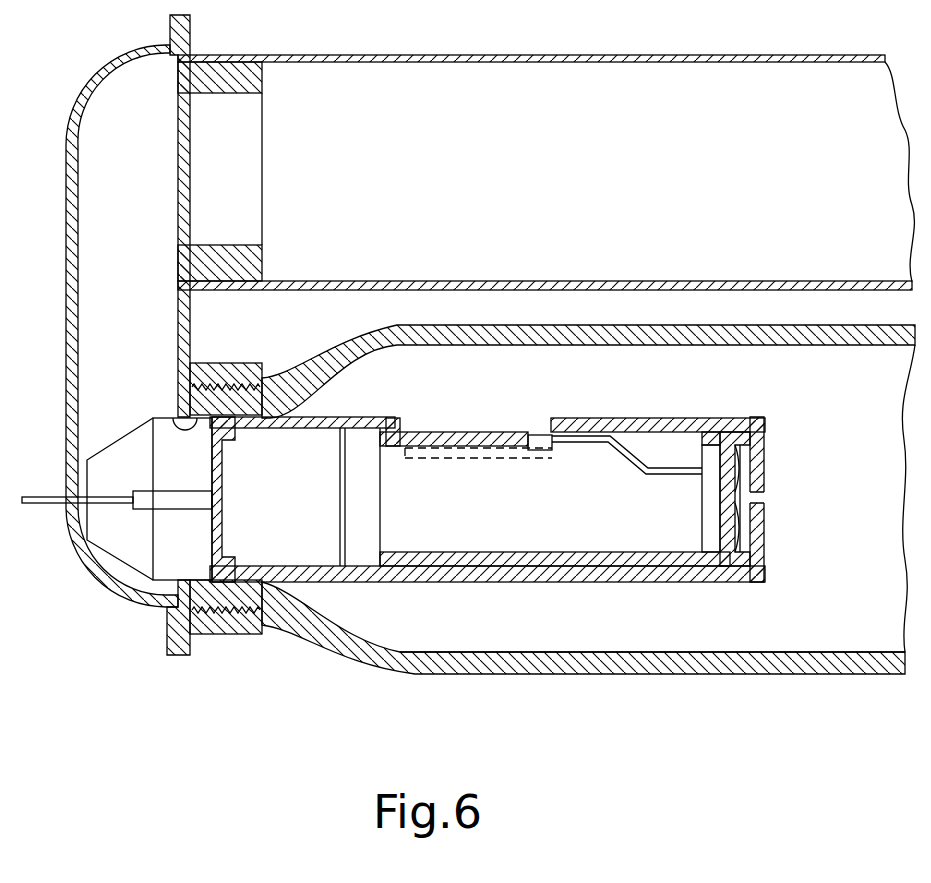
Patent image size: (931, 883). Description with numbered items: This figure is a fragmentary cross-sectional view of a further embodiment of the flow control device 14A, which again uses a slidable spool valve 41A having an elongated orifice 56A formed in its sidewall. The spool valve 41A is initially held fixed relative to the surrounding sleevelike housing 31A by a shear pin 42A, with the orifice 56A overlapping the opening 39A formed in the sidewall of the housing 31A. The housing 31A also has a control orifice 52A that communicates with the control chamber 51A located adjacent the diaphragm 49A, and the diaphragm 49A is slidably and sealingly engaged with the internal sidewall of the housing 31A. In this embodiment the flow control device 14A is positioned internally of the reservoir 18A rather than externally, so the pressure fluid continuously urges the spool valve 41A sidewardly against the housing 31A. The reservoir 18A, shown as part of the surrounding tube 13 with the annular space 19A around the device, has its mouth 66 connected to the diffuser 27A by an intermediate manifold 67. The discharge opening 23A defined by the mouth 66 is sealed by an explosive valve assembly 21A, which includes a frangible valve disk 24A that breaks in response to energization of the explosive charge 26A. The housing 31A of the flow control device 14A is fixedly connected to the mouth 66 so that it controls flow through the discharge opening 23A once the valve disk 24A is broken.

The intermediate manifold 67 is at (82, 108).
The diffuser 27A is at (526, 55).
The housing 31A is at (668, 422).
The tube 13 is at (524, 680).
The reservoir 18A is at (733, 666).
The annular space 19A is at (827, 630).
The mouth 66 is at (221, 600).
The flow control device 14A is at (637, 586).
The frangible valve disk 24A is at (223, 476).
The spool valve 41A is at (530, 557).
The shear pin 42A is at (400, 428).
The opening 39A is at (550, 425).
The elongated orifice 56A is at (578, 442).
The diaphragm 49A is at (727, 527).
The control chamber 51A is at (747, 463).
The control orifice 52A is at (760, 504).
The discharge opening 23A is at (175, 490).
The explosive charge 26A is at (78, 484).
The explosive valve assembly 21A is at (176, 534).